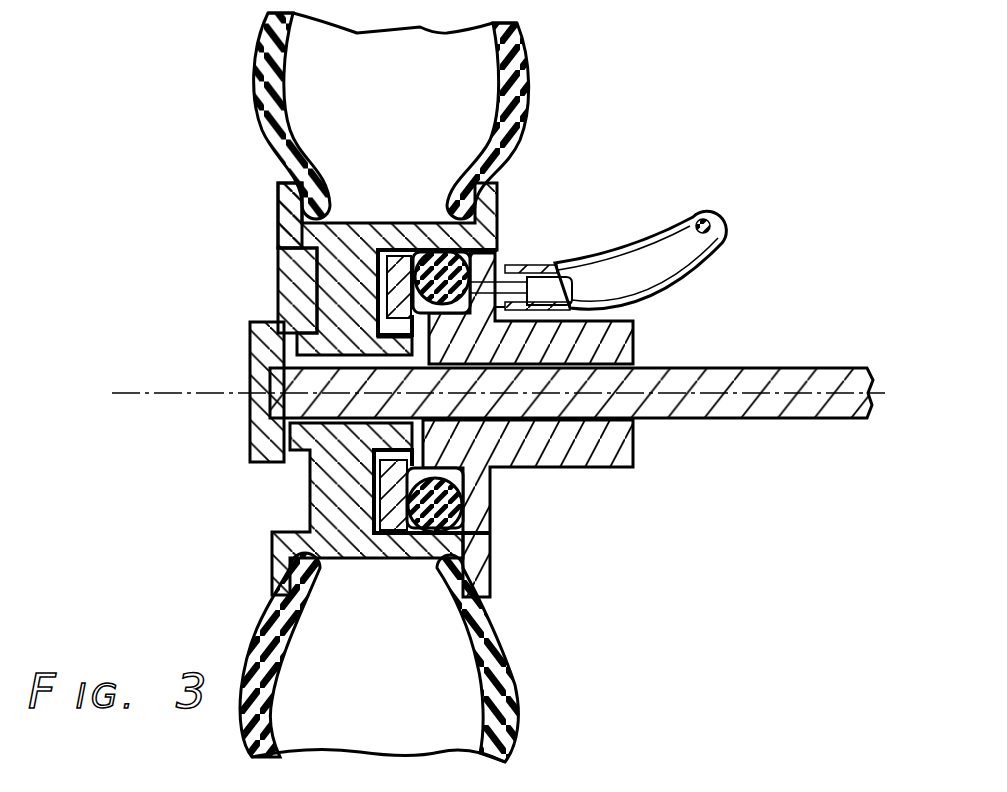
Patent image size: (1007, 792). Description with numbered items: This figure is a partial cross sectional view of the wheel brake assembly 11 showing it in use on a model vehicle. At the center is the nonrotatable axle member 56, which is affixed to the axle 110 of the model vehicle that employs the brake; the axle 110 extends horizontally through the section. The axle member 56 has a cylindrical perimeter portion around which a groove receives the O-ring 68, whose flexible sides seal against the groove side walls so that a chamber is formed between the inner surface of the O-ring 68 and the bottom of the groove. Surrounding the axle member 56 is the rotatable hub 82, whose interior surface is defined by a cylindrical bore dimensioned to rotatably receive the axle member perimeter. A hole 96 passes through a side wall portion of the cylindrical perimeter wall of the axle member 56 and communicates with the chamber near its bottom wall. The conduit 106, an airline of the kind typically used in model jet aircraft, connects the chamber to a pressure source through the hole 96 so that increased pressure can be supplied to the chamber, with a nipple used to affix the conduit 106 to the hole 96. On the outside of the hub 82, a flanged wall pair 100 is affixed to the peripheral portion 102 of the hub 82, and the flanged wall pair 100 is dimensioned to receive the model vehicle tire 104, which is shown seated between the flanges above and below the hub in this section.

The wheel brake assembly 11 is at (608, 170).
The axle member 56 is at (633, 333).
The O-ring 68 is at (465, 530).
The rotatable hub 82 is at (252, 255).
The hole 96 is at (513, 267).
The flanged wall pair 100 is at (278, 183).
The peripheral portion 102 is at (278, 220).
The model vehicle tire 104 is at (527, 50).
The conduit 106 is at (687, 268).
The axle 110 is at (665, 407).